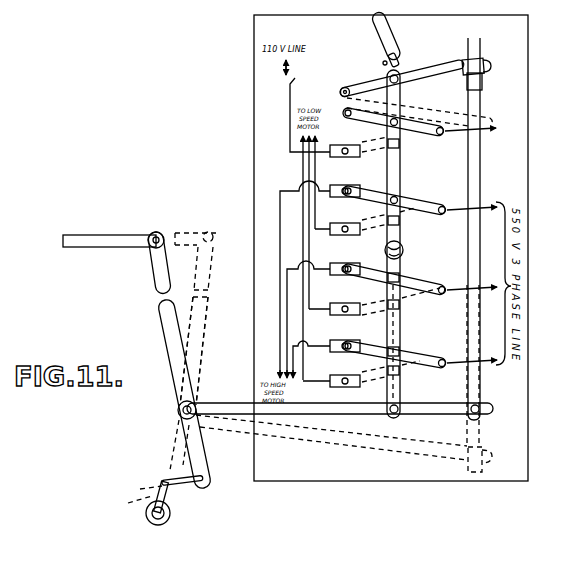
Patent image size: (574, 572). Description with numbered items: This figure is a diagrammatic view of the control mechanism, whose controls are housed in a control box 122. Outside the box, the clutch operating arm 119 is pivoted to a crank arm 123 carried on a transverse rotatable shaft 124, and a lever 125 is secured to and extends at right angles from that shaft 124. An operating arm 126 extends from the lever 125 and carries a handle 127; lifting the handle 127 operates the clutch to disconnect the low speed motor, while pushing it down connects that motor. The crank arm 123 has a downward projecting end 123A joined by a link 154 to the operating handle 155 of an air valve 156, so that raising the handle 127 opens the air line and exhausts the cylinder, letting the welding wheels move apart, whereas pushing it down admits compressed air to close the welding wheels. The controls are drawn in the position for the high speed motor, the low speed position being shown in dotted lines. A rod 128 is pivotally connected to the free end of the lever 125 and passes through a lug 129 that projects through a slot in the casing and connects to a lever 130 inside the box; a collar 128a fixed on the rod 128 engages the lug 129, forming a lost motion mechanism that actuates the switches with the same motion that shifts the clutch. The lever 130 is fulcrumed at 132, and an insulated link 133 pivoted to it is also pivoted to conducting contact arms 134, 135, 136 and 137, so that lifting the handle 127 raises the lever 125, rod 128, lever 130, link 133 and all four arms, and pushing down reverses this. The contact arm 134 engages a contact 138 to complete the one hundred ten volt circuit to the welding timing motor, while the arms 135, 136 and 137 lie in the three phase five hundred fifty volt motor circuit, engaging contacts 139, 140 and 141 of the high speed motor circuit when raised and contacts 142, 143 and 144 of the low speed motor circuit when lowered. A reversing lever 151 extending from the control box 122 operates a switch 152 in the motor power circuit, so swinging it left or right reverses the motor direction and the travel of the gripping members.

The clutch operating arm 119 is at (96, 234).
The control box 122 is at (528, 349).
The crank arm 123 is at (177, 329).
The downward projecting end 123A is at (188, 450).
The transverse rotatable shaft 124 is at (181, 420).
The lever 125 is at (286, 415).
The operating arm 126 is at (400, 388).
The handle 127 is at (403, 250).
The rod 128 is at (481, 388).
The collar 128a is at (483, 80).
The lug 129 is at (483, 60).
The lever 130 is at (426, 70).
The fulcrum 132 is at (341, 92).
The insulated link 133 is at (403, 94).
The contact arm 134 is at (420, 137).
The contact arm 135 is at (415, 203).
The contact arm 136 is at (430, 283).
The contact arm 137 is at (422, 358).
The contact 138 is at (334, 144).
The contact 139 is at (337, 185).
The contact 140 is at (337, 263).
The contact 141 is at (337, 340).
The contact 142 is at (337, 223).
The contact 143 is at (337, 303).
The contact 144 is at (337, 375).
The reversing lever 151 is at (387, 37).
The switch 152 is at (400, 56).
The link 154 is at (178, 486).
The operating handle 155 is at (152, 498).
The air valve 156 is at (150, 524).